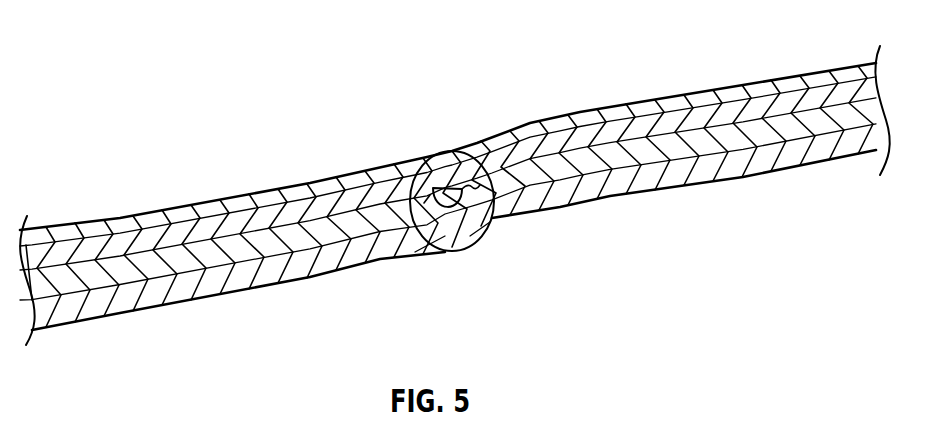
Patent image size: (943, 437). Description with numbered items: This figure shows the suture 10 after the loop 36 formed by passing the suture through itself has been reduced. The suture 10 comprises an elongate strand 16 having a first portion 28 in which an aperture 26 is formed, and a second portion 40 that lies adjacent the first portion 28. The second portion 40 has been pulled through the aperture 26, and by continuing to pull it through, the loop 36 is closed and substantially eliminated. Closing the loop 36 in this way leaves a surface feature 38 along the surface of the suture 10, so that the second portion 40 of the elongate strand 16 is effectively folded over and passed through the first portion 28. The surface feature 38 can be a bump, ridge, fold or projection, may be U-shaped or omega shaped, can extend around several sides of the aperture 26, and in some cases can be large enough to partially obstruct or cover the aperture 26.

The suture 10 is at (203, 166).
The elongate strand 16 is at (598, 150).
The aperture 26 is at (449, 183).
The first portion 28 is at (432, 187).
The loop 36 is at (473, 230).
The surface feature 38 is at (480, 229).
The second portion 40 is at (447, 248).